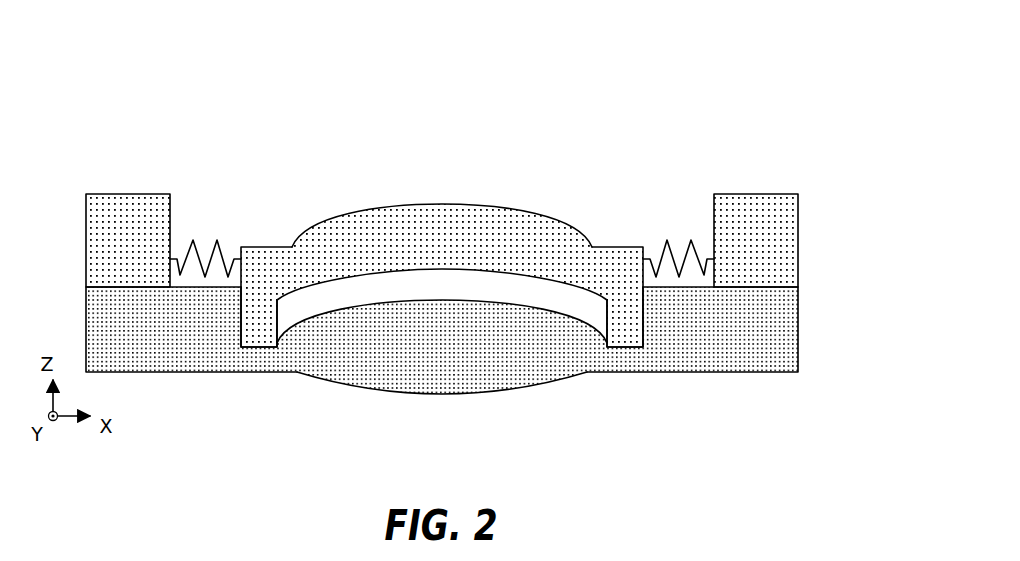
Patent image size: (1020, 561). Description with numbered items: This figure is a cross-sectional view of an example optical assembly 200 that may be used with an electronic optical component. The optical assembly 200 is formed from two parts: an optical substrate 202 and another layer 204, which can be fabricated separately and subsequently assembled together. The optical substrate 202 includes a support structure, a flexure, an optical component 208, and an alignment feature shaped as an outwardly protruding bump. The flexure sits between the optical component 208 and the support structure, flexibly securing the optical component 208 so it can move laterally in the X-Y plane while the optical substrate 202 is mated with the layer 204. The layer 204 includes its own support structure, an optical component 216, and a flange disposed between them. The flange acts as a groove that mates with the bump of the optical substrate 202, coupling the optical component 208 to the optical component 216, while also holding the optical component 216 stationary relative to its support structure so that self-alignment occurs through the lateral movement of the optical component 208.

The optical assembly 200 is at (826, 75).
The optical substrate 202 is at (808, 194).
The layer 204 is at (808, 287).
The optical component 208 is at (447, 226).
The optical component 216 is at (467, 375).